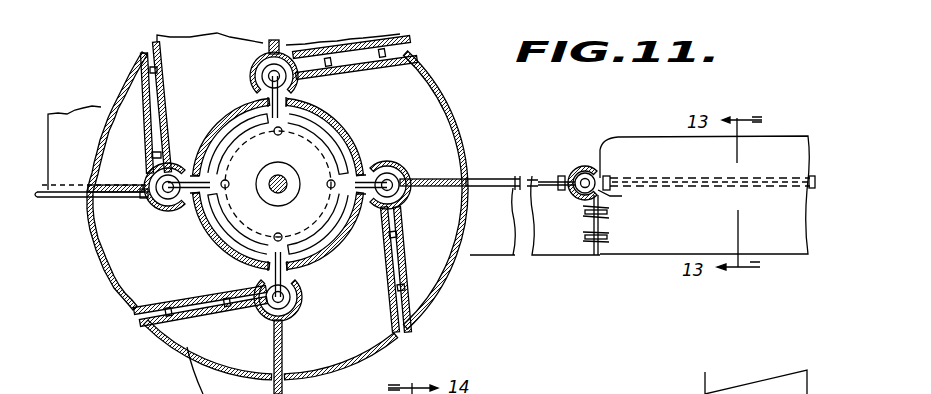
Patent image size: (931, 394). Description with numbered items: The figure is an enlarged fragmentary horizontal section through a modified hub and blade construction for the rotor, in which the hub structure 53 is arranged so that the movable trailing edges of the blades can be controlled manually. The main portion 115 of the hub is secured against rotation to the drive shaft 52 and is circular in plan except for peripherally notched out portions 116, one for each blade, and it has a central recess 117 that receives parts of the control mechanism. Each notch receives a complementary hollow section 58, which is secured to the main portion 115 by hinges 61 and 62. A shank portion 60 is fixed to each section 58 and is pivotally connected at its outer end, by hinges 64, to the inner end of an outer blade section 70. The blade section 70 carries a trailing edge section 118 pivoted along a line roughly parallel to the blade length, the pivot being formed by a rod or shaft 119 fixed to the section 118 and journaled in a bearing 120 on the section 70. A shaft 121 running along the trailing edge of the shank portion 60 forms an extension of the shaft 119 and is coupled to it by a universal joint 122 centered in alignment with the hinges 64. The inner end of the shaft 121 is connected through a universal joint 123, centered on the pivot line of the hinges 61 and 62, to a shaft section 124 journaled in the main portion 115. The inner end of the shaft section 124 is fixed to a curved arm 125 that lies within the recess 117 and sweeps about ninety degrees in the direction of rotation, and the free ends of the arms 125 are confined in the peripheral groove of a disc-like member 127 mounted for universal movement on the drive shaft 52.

The hub structure 53 is at (465, 117).
The main portion of the hub 115 is at (443, 90).
The hollow member 58 is at (157, 340).
The hinge 61 is at (395, 312).
The central recess 117 is at (332, 135).
The hinge 62 is at (372, 250).
The shaft section 124 is at (347, 157).
The peripherally grooved disc-like member 127 is at (233, 220).
The drive shaft 52 is at (270, 197).
The universal joint 123 is at (363, 177).
The curved arm 125 is at (305, 270).
The peripherally notched out portion 116 is at (408, 173).
The shaft 121 is at (490, 177).
The shank portion 60 is at (536, 256).
The trailing edge section 118 is at (707, 195).
The blade section 70 is at (705, 374).
The universal joint 122 is at (578, 166).
The rod or shaft 119 is at (592, 170).
The bearing 120 is at (612, 195).
The hinge 64 is at (588, 240).